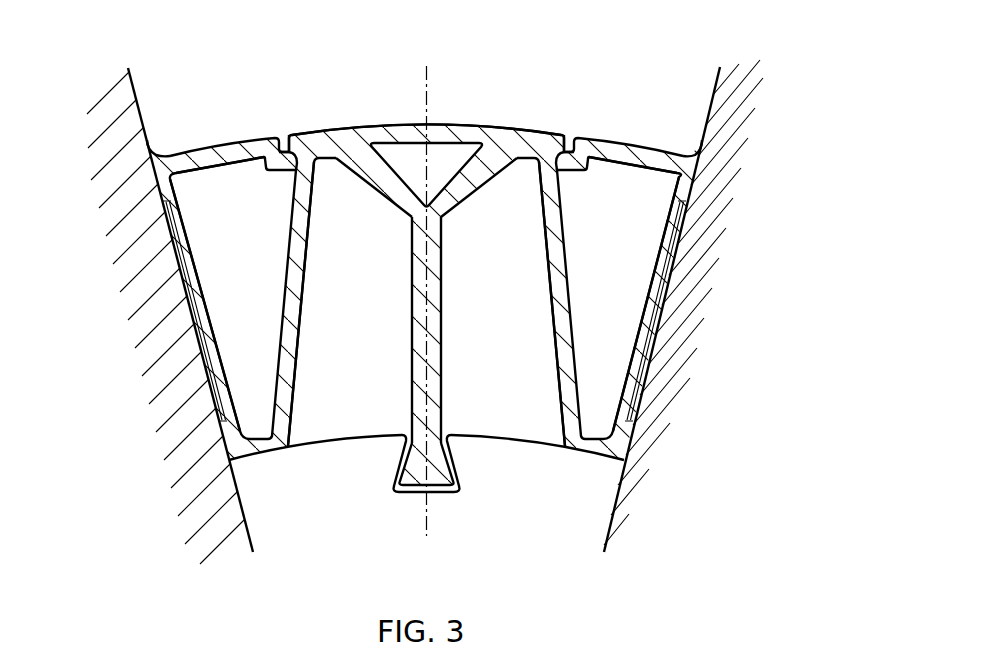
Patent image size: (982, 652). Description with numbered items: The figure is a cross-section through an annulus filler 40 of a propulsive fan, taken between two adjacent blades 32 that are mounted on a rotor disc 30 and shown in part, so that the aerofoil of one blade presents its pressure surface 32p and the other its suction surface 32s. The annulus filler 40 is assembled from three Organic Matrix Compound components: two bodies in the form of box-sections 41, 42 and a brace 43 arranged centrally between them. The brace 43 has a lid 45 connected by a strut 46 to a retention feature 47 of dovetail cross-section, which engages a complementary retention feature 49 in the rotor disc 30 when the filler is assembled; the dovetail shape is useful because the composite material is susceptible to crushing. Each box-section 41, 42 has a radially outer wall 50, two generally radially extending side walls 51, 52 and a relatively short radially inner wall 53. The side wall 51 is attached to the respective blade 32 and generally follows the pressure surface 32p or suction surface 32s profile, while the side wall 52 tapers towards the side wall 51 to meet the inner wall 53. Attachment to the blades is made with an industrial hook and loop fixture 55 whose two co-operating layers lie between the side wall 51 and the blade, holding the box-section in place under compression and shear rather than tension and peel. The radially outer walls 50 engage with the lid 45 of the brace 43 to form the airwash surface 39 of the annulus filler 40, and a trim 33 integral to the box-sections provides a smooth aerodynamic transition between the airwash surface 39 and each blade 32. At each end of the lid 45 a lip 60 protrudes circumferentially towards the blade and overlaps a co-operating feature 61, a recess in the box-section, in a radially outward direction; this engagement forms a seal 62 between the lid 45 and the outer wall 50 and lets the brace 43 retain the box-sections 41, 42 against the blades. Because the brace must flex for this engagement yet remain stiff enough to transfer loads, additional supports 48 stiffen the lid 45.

The rotor disc 30 is at (597, 507).
The blade 32 is at (415, 290).
The pressure surface 32p is at (149, 97).
The suction surface 32s is at (705, 82).
The trim 33 is at (151, 142).
The airwash surface 39 is at (240, 128).
The annulus filler 40 is at (433, 282).
The box-section 41 is at (294, 316).
The box-section 42 is at (557, 320).
The brace 43 is at (426, 284).
The lid 45 is at (445, 130).
The strut 46 is at (436, 318).
The retention feature 47 is at (398, 468).
The support 48 is at (382, 180).
The complementary retention feature 49 is at (474, 477).
The radially outer wall 50 is at (204, 156).
The side wall 51 is at (190, 272).
The side wall 52 is at (302, 242).
The radially inner wall 53 is at (266, 449).
The hook and loop fixture 55 is at (186, 339).
The lip 60 is at (300, 141).
The co-operating feature 61 is at (288, 170).
The seal 62 is at (283, 118).